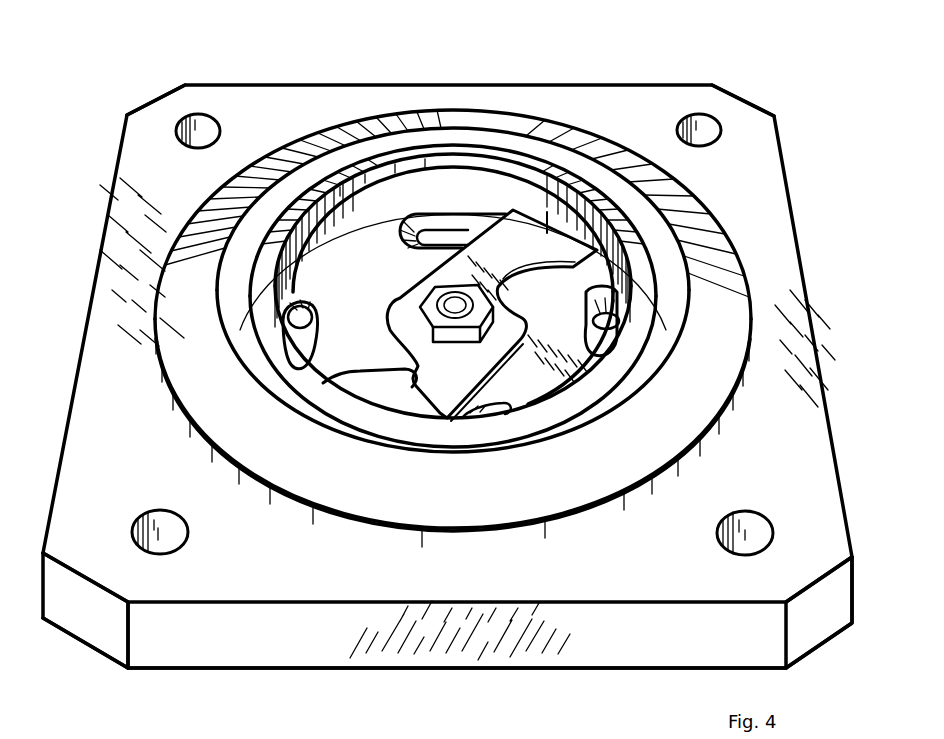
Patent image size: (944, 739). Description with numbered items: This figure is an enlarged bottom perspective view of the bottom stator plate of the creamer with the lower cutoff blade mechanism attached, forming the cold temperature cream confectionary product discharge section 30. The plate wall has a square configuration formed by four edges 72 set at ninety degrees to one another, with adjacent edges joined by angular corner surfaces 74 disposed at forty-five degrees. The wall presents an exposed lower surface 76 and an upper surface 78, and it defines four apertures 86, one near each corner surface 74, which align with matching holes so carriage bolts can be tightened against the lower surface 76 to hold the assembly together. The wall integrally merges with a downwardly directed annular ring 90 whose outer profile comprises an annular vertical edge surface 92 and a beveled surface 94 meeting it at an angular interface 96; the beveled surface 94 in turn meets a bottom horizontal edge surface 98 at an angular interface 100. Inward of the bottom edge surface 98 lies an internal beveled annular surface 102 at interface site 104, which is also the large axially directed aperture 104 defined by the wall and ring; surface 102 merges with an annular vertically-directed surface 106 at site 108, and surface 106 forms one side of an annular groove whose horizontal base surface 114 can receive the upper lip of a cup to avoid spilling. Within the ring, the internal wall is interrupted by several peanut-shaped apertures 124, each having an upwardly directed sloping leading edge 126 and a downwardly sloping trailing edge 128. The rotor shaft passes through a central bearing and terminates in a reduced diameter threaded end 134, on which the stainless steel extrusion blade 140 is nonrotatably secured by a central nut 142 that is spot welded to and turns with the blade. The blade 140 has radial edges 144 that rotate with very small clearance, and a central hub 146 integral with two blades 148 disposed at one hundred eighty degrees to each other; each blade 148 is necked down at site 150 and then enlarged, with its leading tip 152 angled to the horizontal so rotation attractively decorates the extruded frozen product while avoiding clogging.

The cold temperature cream confectionary product discharge section 30 is at (376, 106).
The edges 72 is at (232, 649).
The angular corner surfaces 74 is at (826, 622).
The exposed lower surface 76 is at (774, 499).
The upper surface 78 is at (457, 694).
The apertures 86 is at (422, 327).
The annular ring 90 is at (185, 377).
The annular vertical edge surface 92 is at (453, 450).
The beveled surface 94 is at (358, 474).
The angular interface 96 is at (452, 440).
The bottom horizontal edge surface 98 is at (376, 424).
The angular interface 100 is at (453, 399).
The internal annular surface 102 is at (449, 155).
The aperture 104 is at (452, 371).
The annular vertically-directed surface 106 is at (453, 168).
The site 108 is at (453, 175).
The horizontal base surface 114 is at (453, 162).
The peanut-shaped apertures 124 is at (499, 295).
The sloping leading edge 126 is at (505, 271).
The sloping trailing edge 128 is at (472, 355).
The reduced diameter threaded end 134 is at (492, 315).
The blade 140 is at (461, 210).
The central nut 142 is at (463, 344).
The radial edges 144 is at (637, 208).
The central hub 146 is at (419, 334).
The blades 148 is at (389, 401).
The necked down site 150 is at (481, 370).
The leading tip 152 is at (496, 357).